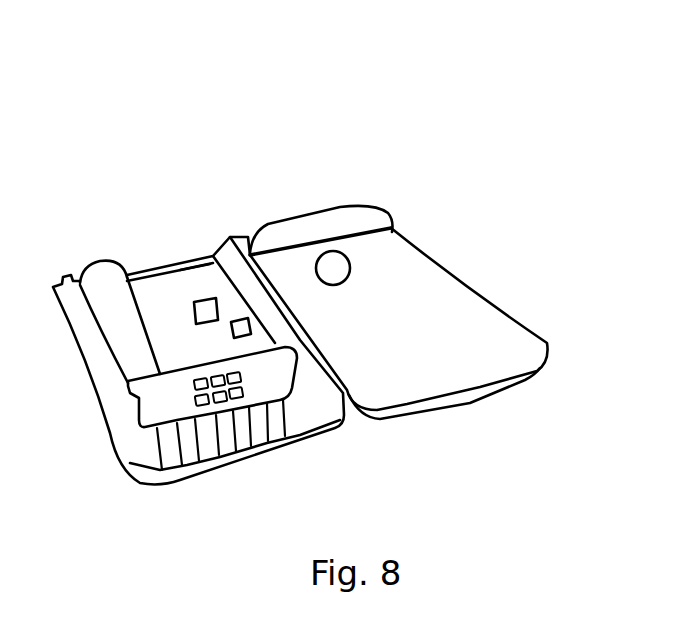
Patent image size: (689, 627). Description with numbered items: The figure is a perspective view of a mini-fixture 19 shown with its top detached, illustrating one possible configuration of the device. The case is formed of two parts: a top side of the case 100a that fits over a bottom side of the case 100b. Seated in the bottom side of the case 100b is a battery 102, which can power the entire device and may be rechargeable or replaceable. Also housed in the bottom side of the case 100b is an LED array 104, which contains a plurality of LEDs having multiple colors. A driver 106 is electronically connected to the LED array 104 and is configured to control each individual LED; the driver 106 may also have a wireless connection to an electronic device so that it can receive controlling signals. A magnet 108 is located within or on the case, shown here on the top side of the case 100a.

The mini-fixture 19 is at (186, 104).
The top side of the case 100a is at (317, 208).
The bottom side of the case 100b is at (107, 427).
The battery 102 is at (100, 260).
The LED array 104 is at (176, 402).
The driver 106 is at (204, 300).
The magnet 108 is at (346, 256).